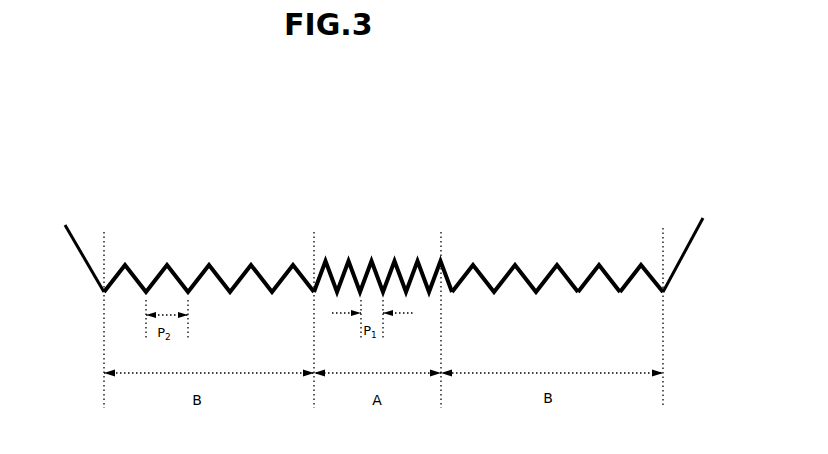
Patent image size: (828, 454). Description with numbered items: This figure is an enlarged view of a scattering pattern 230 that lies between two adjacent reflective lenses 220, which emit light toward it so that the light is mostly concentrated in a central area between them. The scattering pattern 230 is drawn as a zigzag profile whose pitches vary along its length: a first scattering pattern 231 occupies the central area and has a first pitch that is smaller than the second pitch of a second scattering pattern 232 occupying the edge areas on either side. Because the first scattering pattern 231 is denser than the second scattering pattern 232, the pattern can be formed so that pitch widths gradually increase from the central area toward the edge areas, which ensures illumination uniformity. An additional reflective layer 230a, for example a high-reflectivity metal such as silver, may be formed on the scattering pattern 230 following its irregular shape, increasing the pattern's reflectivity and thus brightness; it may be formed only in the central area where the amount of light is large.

The reflective lens 220 is at (87, 235).
The scattering pattern 230 is at (383, 226).
The first scattering pattern 231 is at (382, 260).
The second scattering pattern 232 is at (267, 268).
The reflective layer 230a is at (596, 234).